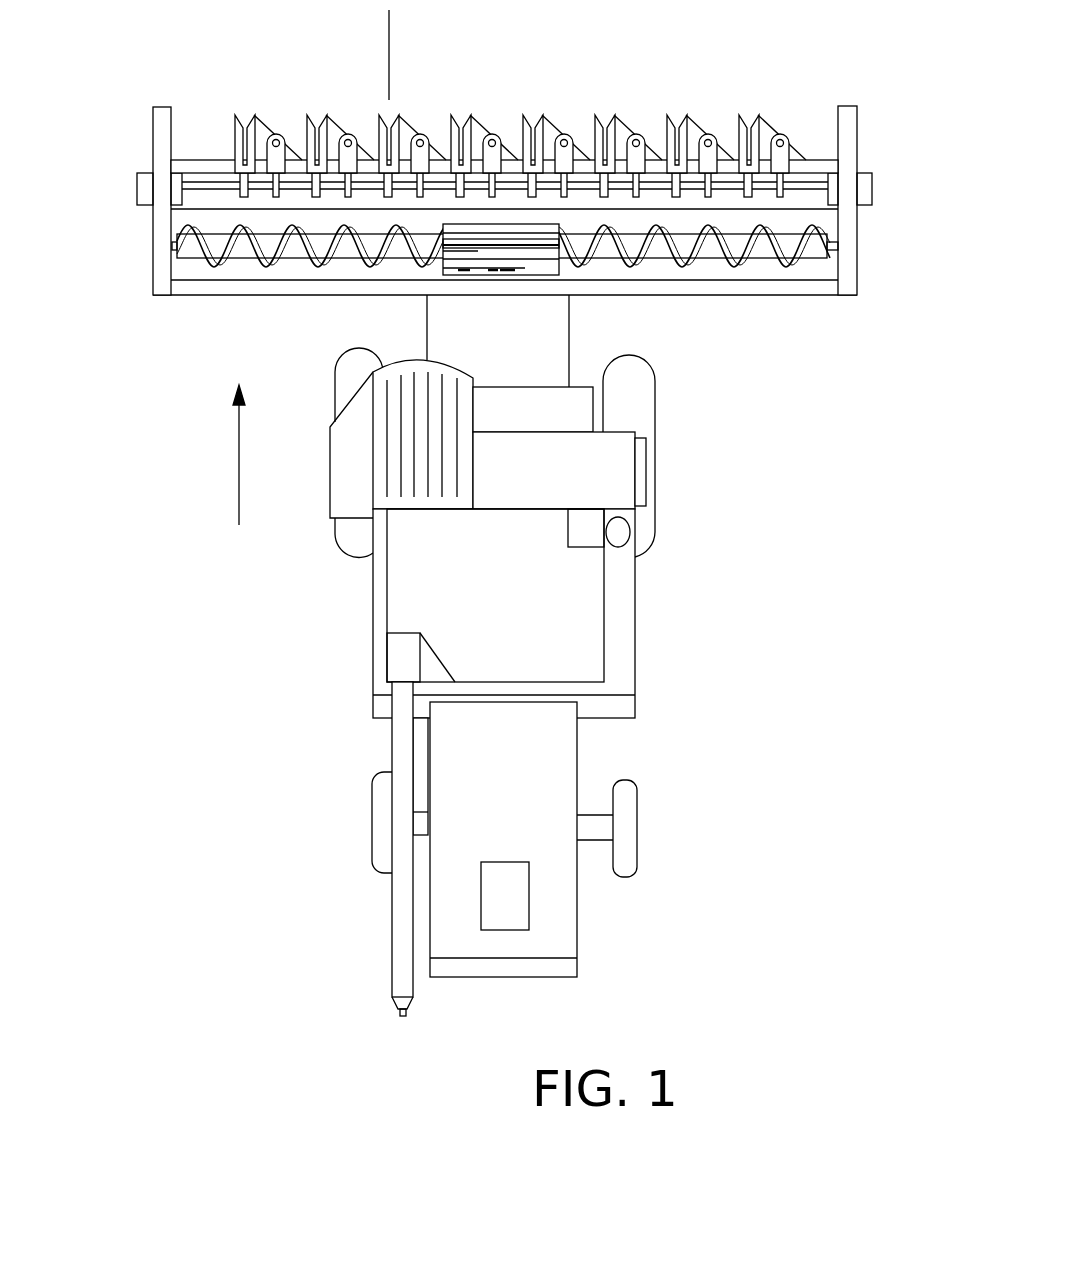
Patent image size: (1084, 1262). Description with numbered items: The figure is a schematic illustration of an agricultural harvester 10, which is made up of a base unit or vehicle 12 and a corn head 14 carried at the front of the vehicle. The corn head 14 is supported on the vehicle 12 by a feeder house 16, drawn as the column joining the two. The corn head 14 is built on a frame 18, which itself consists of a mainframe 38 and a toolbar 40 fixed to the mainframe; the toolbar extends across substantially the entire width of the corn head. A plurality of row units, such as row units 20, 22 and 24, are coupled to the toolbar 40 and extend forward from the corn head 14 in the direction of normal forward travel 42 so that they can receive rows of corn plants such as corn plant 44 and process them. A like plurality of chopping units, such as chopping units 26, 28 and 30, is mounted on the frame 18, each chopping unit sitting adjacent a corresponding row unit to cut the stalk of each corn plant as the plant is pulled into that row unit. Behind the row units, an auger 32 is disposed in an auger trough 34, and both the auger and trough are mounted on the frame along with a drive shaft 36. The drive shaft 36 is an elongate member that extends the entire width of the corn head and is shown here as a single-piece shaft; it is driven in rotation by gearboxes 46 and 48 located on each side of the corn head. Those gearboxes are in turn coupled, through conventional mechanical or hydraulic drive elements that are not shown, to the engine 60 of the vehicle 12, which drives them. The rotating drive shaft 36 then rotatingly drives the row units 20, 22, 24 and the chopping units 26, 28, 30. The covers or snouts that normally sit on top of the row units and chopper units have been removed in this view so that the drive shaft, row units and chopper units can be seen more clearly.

The agricultural harvester 10 is at (574, 682).
The vehicle 12 is at (577, 772).
The corn head 14 is at (783, 297).
The feeder house 16 is at (427, 326).
The frame 18 is at (153, 280).
The row unit 20 is at (235, 120).
The row unit 22 is at (313, 120).
The row unit 24 is at (740, 117).
The chopping unit 26 is at (273, 135).
The chopping unit 28 is at (357, 144).
The chopping unit 30 is at (779, 135).
The auger 32 is at (237, 254).
The auger trough 34 is at (290, 273).
The drive shaft 36 is at (202, 192).
The mainframe 38 is at (160, 113).
The toolbar 40 is at (222, 158).
The direction of normal forward travel 42 is at (239, 453).
The corn plant 44 is at (389, 50).
The gearbox 46 is at (137, 184).
The gearbox 48 is at (873, 188).
The engine 60 is at (529, 903).